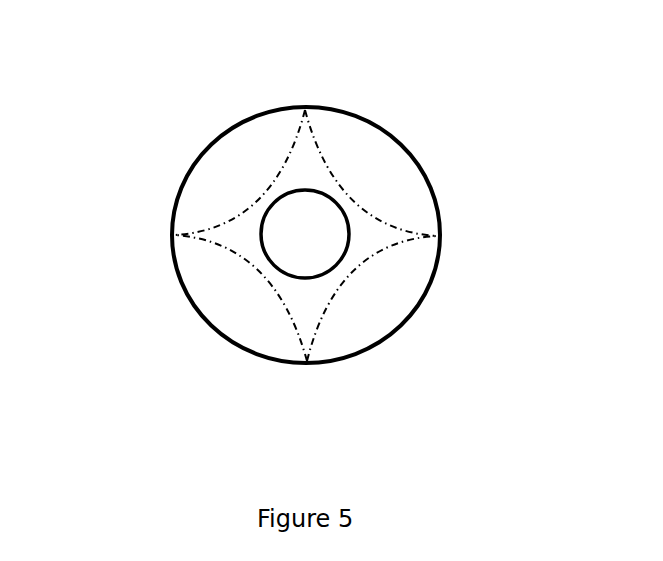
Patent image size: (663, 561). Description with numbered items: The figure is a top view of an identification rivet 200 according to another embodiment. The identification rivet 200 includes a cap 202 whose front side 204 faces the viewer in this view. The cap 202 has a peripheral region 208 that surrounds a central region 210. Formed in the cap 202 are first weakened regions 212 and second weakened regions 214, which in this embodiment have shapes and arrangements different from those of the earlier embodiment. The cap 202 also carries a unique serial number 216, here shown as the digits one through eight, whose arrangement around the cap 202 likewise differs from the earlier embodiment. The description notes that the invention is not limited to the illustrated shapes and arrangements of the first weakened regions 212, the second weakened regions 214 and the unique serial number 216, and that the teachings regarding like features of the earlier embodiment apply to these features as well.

The identification rivet 200 is at (100, 84).
The cap 202 is at (395, 133).
The front side 204 is at (433, 209).
The peripheral region 208 is at (210, 167).
The central region 210 is at (288, 276).
The first weakened regions 212 is at (299, 134).
The second weakened regions 214 is at (310, 143).
The unique serial number 216 is at (192, 188).